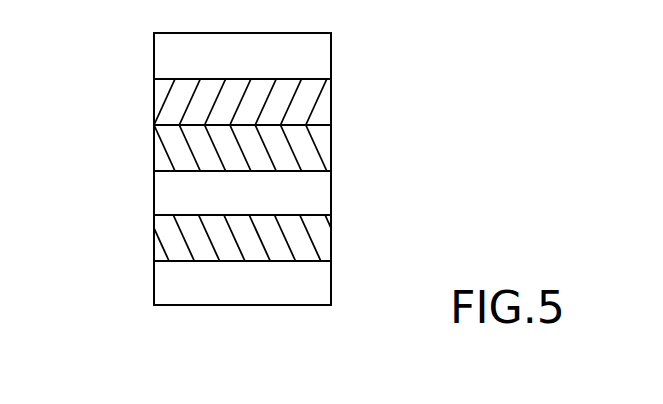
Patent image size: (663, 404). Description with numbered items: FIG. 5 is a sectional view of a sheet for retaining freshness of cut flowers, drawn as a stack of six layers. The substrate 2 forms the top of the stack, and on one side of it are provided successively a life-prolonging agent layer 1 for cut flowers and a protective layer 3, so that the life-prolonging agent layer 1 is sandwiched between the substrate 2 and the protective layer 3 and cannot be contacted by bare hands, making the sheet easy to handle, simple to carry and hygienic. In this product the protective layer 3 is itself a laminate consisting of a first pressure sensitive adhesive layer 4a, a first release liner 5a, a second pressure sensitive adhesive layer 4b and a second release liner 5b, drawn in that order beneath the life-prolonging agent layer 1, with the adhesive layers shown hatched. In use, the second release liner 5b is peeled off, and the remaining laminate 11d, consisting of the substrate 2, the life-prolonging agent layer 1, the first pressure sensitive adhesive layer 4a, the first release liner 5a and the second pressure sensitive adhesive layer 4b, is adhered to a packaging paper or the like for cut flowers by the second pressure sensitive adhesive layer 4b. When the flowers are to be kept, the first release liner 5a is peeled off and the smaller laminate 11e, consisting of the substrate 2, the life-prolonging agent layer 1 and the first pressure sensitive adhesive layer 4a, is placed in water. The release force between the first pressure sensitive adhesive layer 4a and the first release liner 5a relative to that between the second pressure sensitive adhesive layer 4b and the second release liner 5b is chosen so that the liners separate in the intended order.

The substrate 2 is at (323, 58).
The life-prolonging agent layer 1 is at (322, 111).
The first pressure sensitive adhesive layer 4a is at (322, 148).
The first release liner 5a is at (322, 193).
The second pressure sensitive adhesive layer 4b is at (322, 238).
The second release liner 5b is at (322, 287).
The protective layer 3 is at (410, 132).
The laminate 11e is at (137, 27).
The laminate 11d is at (457, 267).